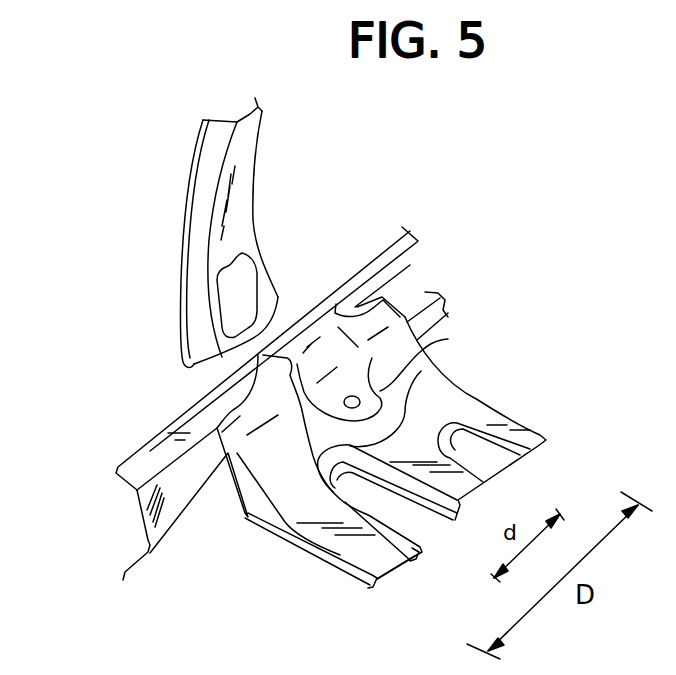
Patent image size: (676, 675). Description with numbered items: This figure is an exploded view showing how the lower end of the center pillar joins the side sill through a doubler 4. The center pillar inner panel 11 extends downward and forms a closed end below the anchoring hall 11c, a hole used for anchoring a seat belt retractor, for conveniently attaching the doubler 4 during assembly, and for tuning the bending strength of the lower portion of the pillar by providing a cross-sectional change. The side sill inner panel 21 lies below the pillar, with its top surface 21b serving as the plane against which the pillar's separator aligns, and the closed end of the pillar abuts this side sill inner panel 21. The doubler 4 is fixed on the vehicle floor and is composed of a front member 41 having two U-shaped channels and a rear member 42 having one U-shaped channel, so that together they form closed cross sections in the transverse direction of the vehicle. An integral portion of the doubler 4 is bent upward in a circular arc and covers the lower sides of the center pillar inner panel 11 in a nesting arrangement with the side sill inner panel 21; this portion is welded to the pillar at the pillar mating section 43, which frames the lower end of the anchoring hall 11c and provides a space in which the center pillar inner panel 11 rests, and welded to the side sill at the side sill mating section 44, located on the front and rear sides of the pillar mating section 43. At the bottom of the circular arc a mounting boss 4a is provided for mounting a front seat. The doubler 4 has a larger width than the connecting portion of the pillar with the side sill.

The center pillar inner panel 11 is at (242, 163).
The anchoring hall 11c is at (237, 272).
The side sill mating section 44 is at (245, 425).
The pillar mating section 43 is at (333, 360).
The mounting boss 4a is at (448, 339).
The doubler 4 is at (511, 411).
The front member 41 is at (517, 437).
The rear member 42 is at (368, 553).
The top surface 21b is at (145, 468).
The side sill inner panel 21 is at (140, 513).